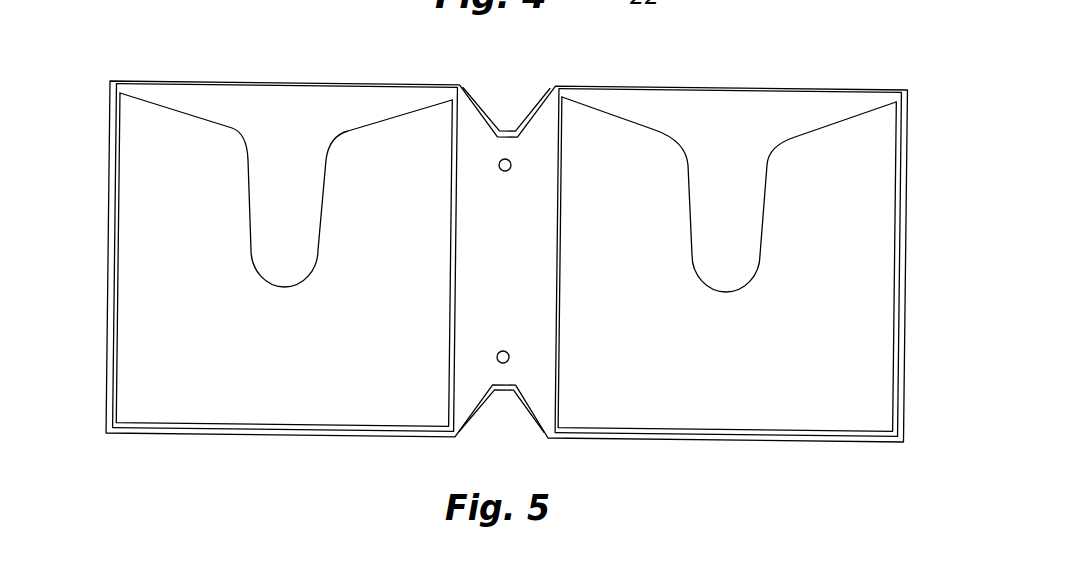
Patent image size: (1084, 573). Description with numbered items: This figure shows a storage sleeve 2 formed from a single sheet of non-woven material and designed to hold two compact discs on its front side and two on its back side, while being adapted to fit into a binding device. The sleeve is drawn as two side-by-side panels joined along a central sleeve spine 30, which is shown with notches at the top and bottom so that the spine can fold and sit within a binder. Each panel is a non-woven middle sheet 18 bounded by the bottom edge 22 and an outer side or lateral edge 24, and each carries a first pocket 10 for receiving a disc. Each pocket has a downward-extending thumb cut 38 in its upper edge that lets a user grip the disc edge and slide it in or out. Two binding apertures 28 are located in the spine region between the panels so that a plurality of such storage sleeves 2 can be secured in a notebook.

The storage sleeve 2 is at (700, 57).
The first pocket 10 is at (232, 125).
The non-woven middle sheet 18 is at (305, 113).
The bottom edge 22 is at (414, 437).
The side or lateral edge 24 is at (108, 312).
The binding aperture 28 is at (509, 169).
The sleeve spine 30 is at (547, 118).
The thumb cut 38 is at (322, 248).